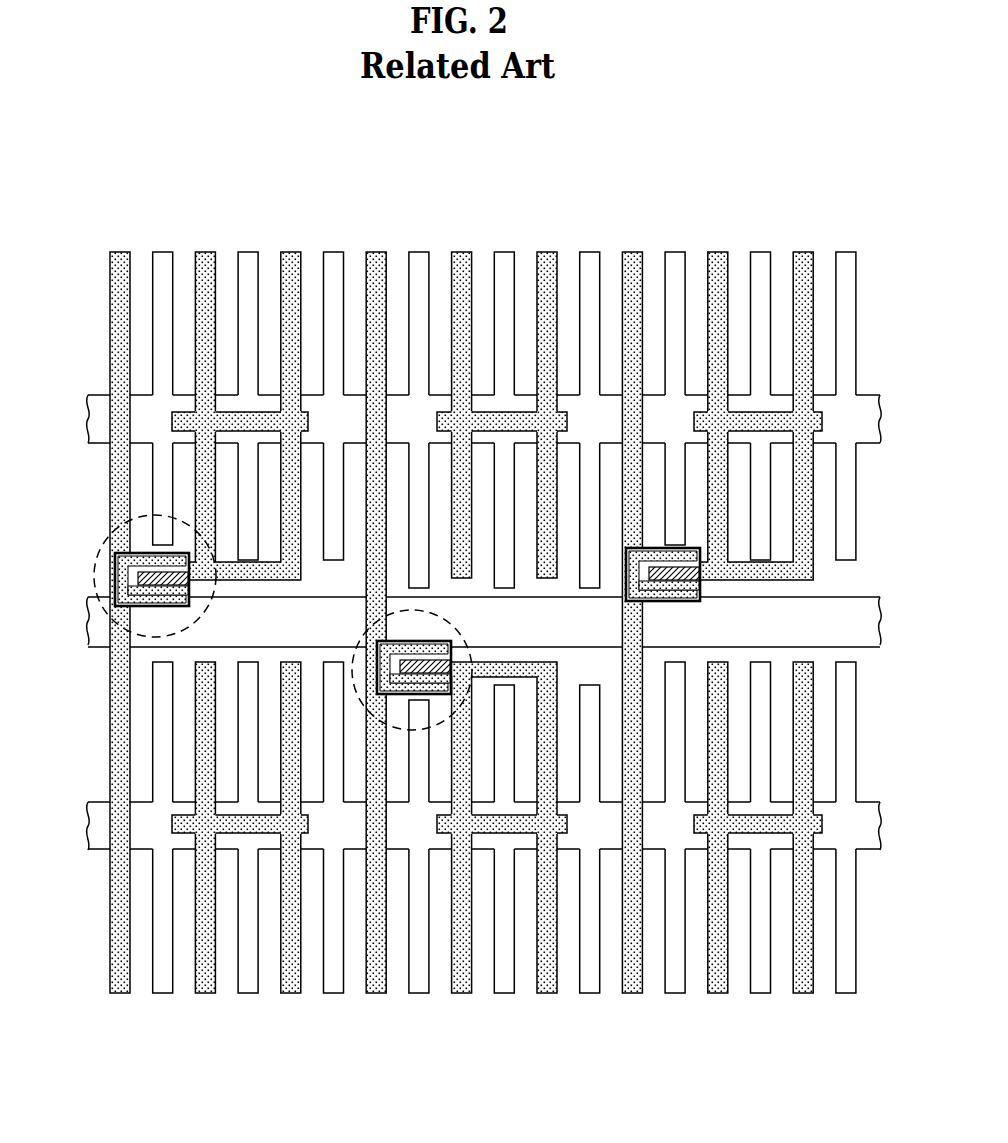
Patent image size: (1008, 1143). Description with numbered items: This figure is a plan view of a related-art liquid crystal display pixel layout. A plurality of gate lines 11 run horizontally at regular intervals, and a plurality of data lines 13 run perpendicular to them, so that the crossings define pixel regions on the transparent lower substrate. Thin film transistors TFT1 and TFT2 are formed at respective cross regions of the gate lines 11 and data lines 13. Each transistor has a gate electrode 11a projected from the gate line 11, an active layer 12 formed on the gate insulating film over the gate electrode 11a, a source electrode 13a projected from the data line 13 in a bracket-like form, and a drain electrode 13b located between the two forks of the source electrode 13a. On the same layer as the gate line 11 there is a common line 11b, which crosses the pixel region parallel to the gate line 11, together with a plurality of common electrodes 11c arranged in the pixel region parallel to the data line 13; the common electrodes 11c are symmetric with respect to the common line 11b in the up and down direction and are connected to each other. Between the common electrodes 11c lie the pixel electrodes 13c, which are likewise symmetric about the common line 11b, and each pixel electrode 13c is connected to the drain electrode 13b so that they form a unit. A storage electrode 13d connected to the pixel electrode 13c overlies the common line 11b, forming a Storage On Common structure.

The gate line 11 is at (93, 624).
The gate electrode 11a is at (189, 553).
The common line 11b is at (90, 409).
The common electrode 11c is at (333, 252).
The active layer 12 is at (178, 606).
The data line 13 is at (112, 288).
The source electrode 13a is at (137, 556).
The drain electrode 13b is at (120, 575).
The pixel electrode 13c is at (208, 326).
The storage electrode 13d is at (272, 424).
The thin film transistor TFT1 is at (101, 548).
The thin film transistor TFT2 is at (458, 628).